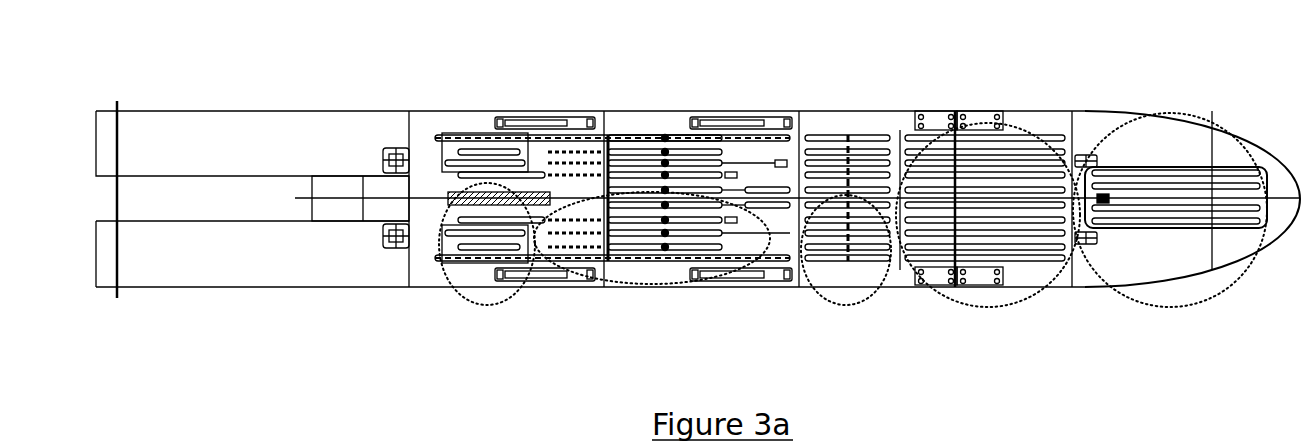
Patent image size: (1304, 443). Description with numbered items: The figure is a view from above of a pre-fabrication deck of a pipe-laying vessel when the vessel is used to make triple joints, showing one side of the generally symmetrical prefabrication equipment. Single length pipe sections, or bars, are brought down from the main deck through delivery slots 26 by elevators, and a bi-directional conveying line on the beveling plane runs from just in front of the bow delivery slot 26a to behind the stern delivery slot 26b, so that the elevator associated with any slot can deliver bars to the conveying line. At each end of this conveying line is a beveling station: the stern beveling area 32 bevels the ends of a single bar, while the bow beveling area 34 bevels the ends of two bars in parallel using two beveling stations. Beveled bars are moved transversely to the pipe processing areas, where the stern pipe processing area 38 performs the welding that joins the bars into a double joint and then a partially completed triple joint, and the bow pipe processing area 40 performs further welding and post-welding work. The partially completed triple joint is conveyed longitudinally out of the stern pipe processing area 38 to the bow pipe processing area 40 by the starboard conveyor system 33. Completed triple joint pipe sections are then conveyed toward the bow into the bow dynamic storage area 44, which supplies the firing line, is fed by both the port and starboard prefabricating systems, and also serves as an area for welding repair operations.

The delivery slots 26 is at (745, 287).
The bow delivery slot 26a is at (737, 114).
The stern delivery slot 26b is at (528, 114).
The stern beveling area 32 is at (485, 309).
The starboard conveyor system 33 is at (772, 263).
The bow beveling area 34 is at (842, 302).
The stern pipe processing area 38 is at (655, 288).
The bow pipe processing area 40 is at (960, 308).
The bow dynamic storage area 44 is at (1172, 310).